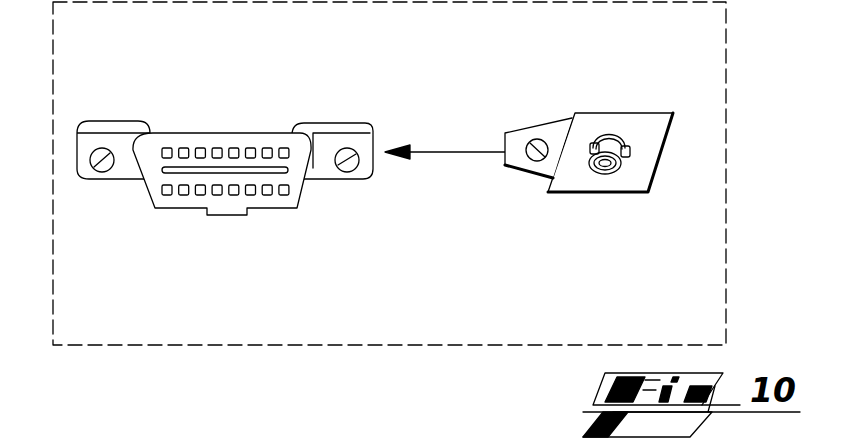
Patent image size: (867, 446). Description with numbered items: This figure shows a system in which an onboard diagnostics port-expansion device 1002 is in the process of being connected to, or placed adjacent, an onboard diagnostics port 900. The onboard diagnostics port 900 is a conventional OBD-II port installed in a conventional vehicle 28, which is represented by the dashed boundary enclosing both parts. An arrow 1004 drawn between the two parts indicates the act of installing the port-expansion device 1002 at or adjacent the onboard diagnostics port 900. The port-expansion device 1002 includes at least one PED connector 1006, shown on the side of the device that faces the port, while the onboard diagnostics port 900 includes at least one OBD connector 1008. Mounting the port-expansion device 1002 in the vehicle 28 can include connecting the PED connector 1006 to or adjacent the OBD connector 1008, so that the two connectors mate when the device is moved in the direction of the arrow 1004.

The vehicle 28 is at (726, 138).
The onboard diagnostics port 900 is at (225, 164).
The onboard diagnostics port-expansion device 1002 is at (568, 237).
The arrow 1004 is at (443, 151).
The PED connector 1006 is at (545, 138).
The OBD connector 1008 is at (338, 173).